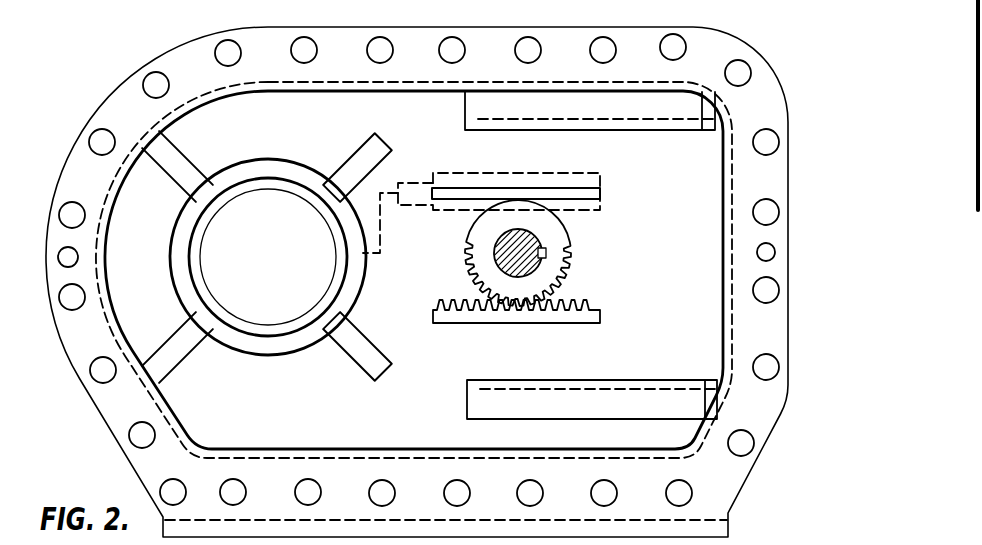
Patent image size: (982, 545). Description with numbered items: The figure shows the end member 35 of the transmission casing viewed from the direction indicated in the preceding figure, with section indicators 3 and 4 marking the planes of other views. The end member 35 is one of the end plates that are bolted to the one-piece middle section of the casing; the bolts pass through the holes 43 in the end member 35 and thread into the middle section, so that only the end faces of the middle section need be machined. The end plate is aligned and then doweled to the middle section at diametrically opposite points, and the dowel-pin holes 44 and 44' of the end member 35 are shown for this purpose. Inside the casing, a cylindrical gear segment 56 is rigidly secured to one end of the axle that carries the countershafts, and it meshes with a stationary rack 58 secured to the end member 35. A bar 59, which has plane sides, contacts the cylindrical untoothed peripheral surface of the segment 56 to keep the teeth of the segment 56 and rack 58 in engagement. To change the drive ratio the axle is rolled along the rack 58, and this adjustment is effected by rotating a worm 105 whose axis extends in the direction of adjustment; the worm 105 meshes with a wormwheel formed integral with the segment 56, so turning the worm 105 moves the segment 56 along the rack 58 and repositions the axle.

The end member 35 is at (411, 32).
The holes 43 is at (520, 49).
The dowel-pin hole 44 is at (103, 263).
The dowel-pin hole 44' is at (734, 255).
The worm 105 is at (504, 172).
The bar 59 is at (527, 187).
The cylindrical gear segment 56 is at (557, 240).
The stationary rack 58 is at (598, 314).
The section line 3- 3 is at (23, 257).
The section line 4- 4 is at (603, 36).